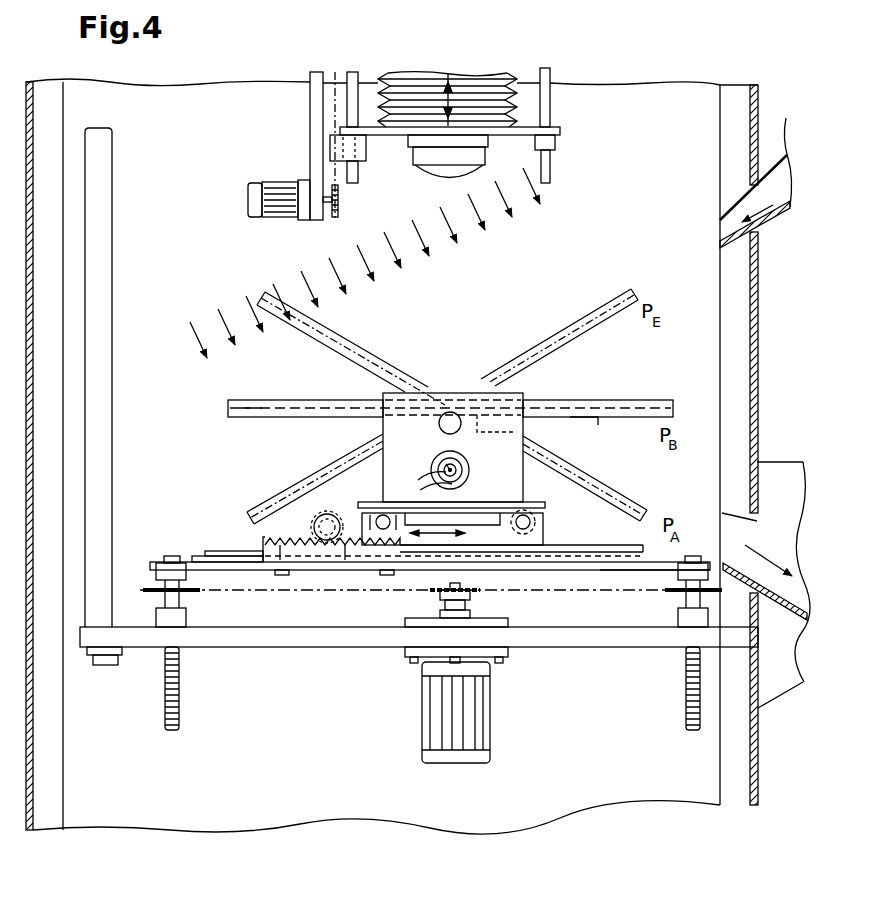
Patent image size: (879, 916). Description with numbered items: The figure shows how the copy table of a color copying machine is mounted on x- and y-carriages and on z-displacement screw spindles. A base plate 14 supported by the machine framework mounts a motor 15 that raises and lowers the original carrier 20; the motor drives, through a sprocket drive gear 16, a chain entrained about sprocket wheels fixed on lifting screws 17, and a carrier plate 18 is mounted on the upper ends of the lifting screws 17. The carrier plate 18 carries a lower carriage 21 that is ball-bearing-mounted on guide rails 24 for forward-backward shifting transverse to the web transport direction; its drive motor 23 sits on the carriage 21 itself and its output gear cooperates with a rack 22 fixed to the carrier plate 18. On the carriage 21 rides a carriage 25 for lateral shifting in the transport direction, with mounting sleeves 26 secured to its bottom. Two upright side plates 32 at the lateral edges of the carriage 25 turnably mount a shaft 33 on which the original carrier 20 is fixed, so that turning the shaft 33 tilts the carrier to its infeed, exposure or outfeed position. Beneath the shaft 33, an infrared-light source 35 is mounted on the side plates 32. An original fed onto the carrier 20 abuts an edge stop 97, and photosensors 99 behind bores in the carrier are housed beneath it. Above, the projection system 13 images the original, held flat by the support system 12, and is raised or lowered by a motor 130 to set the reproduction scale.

The support system 12 is at (483, 358).
The projection system 13 is at (485, 62).
The motor 130 is at (283, 183).
The copy easel (original carrier) 20 is at (228, 408).
The edge stop 97 is at (252, 400).
The photosensors 99 is at (598, 425).
The upright side plates 32 is at (523, 393).
The shaft 33 is at (451, 412).
The infrared-light source 35 is at (470, 475).
The carriage 25 is at (545, 506).
The carriage 21 is at (543, 538).
The mounting sleeves 26 is at (540, 524).
The drive motor 23 is at (320, 517).
The guide rails 24 is at (232, 556).
The rack 22 is at (325, 565).
The carrier plate 18 is at (630, 568).
The sprocket drive gear 16 is at (468, 593).
The base plate 14 is at (133, 640).
The motor 15 is at (482, 700).
The lifting screws 17 is at (180, 690).